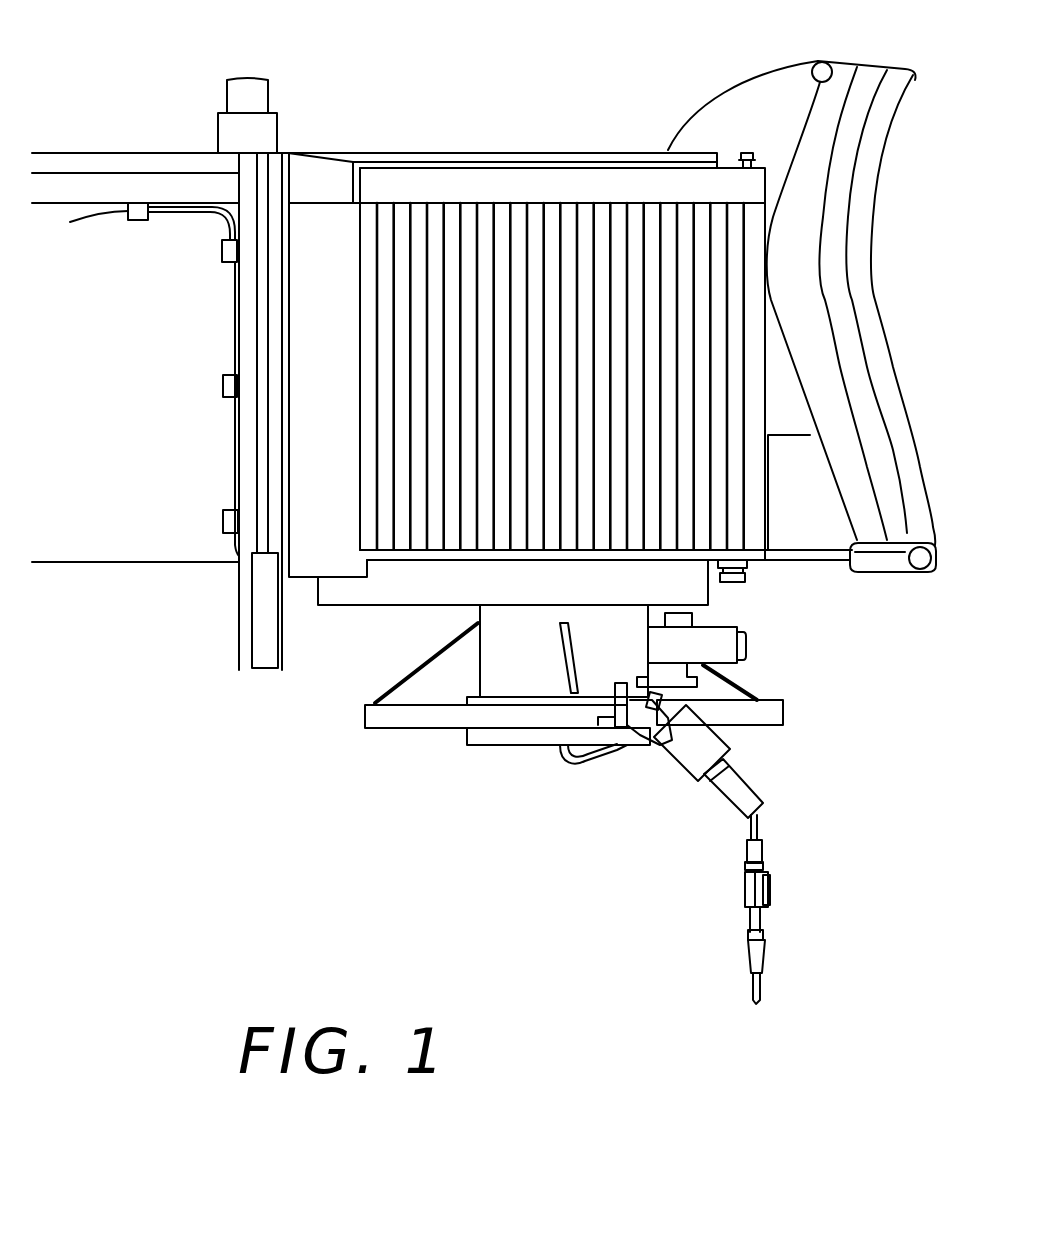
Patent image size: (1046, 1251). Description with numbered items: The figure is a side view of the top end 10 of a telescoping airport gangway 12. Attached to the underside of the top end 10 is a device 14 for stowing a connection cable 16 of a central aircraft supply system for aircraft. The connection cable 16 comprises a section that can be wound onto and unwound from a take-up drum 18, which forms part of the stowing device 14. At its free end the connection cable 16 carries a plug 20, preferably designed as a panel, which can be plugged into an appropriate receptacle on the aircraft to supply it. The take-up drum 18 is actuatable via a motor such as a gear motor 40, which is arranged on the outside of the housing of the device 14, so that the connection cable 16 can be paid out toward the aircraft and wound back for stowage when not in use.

The top end 10 is at (480, 130).
The telescoping airport gangway 12 is at (55, 187).
The device 14 is at (798, 703).
The connection cable 16 is at (757, 828).
The take-up drum 18 is at (400, 744).
The plug 20 is at (768, 892).
The gear motor 40 is at (730, 652).